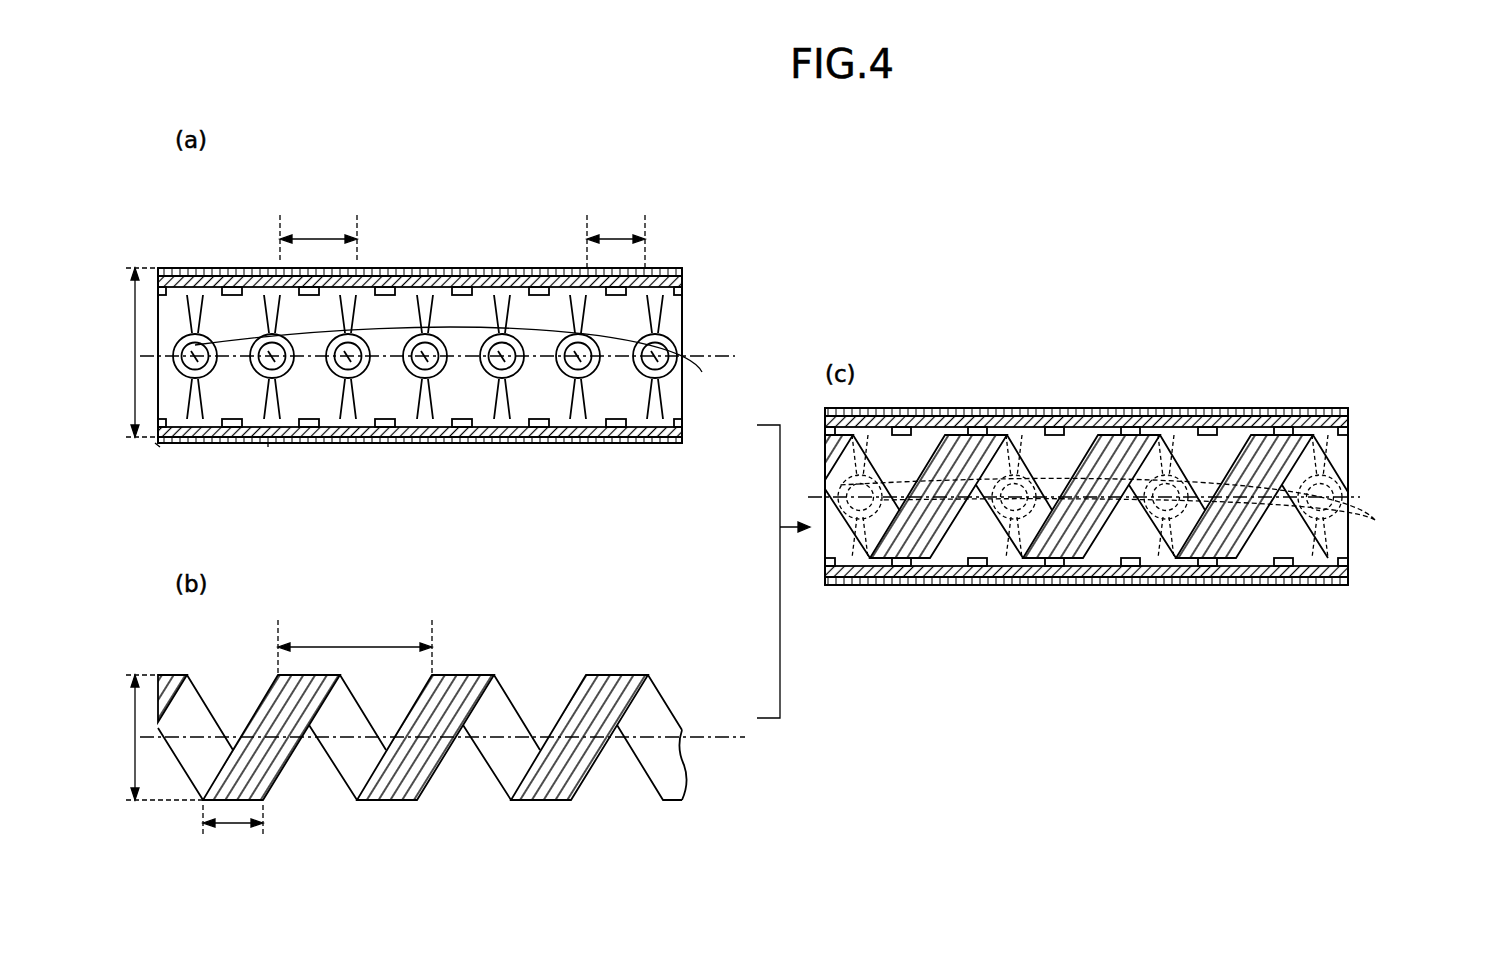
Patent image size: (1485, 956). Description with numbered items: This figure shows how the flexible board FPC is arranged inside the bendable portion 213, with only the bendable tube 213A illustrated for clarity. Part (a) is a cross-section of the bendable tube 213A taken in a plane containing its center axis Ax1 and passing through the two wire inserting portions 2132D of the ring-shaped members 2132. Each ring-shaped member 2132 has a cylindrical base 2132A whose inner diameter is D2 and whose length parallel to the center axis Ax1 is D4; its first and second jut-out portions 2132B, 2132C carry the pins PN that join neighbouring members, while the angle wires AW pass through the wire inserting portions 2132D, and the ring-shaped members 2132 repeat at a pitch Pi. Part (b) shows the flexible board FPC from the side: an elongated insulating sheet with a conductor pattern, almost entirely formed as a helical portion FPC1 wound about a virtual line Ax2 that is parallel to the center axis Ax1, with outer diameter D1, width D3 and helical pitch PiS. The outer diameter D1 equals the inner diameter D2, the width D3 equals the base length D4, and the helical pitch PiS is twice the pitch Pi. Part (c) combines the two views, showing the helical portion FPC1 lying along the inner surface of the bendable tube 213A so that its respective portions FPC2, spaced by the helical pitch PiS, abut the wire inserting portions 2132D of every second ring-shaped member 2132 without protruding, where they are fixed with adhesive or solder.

The bendable portion 213 is at (1348, 396).
The bendable tube 213A is at (686, 249).
The ring-shaped member 2132 is at (166, 268).
The cylindrical base 2132A is at (264, 268).
The first jut-out portion 2132B is at (275, 350).
The second jut-out portion 2132C is at (1380, 520).
The wire inserting portion 2132D is at (230, 287).
The angle wire AW is at (683, 270).
The center axis of the bendable tube Ax1 is at (712, 355).
The virtual line Ax2 is at (718, 737).
The pin PN is at (160, 445).
The flexible board FPC is at (648, 697).
The helical portion FPC1 is at (776, 719).
The respective portions of the helical portion FPC2 is at (158, 735).
The outer diameter dimension D1 is at (152, 737).
The inner diameter dimension D2 is at (130, 352).
The width dimension D3 is at (233, 827).
The length dimension D4 is at (616, 241).
The pitch of the ring-shaped members Pi is at (318, 238).
The helical pitch PiS is at (355, 645).